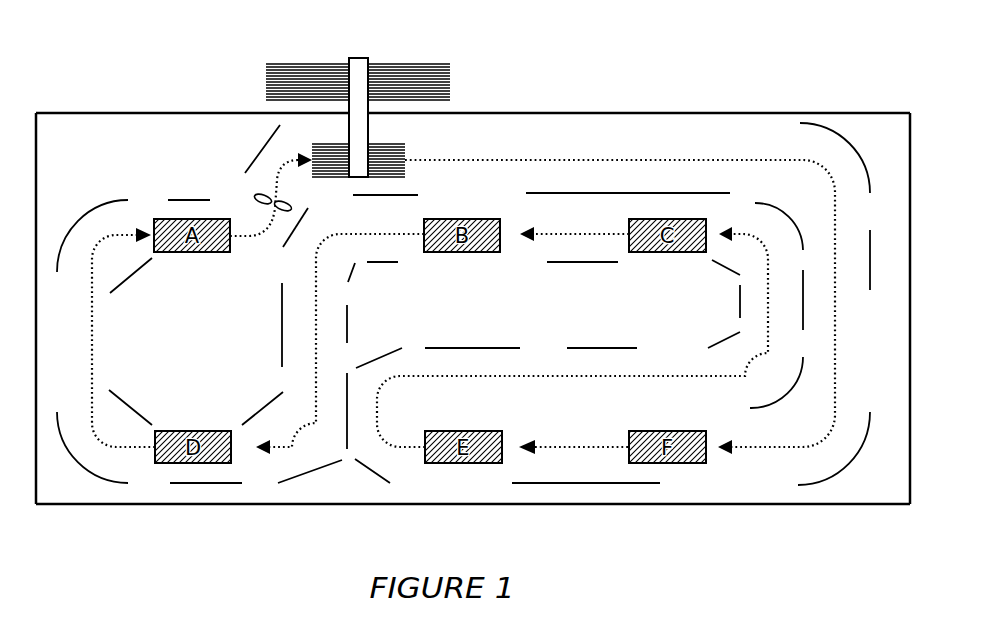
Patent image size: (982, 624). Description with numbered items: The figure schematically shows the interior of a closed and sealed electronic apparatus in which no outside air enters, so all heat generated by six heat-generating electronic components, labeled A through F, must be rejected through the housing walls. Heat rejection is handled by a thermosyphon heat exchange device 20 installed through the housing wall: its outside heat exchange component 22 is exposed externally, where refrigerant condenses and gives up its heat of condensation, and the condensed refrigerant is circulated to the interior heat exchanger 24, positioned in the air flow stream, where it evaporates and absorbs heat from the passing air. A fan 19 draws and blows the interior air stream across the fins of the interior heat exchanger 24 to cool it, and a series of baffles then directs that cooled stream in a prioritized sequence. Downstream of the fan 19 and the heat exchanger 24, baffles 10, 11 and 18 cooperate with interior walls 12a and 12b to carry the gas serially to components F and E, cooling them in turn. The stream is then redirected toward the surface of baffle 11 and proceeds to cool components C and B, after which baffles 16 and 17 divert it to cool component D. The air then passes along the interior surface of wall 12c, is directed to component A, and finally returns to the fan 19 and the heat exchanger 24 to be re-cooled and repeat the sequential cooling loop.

The baffle 10 is at (638, 193).
The baffle 11 is at (782, 210).
The interior wall 12a is at (638, 113).
The interior wall 12b is at (910, 282).
The wall 12c is at (36, 197).
The baffle 16 is at (302, 226).
The baffle 17 is at (303, 472).
The baffle 18 is at (854, 149).
The fan 19 is at (262, 198).
The thermosyphon heat exchange device 20 is at (360, 58).
The outside heat exchange component 22 is at (450, 80).
The interior heat exchanger 24 is at (405, 166).